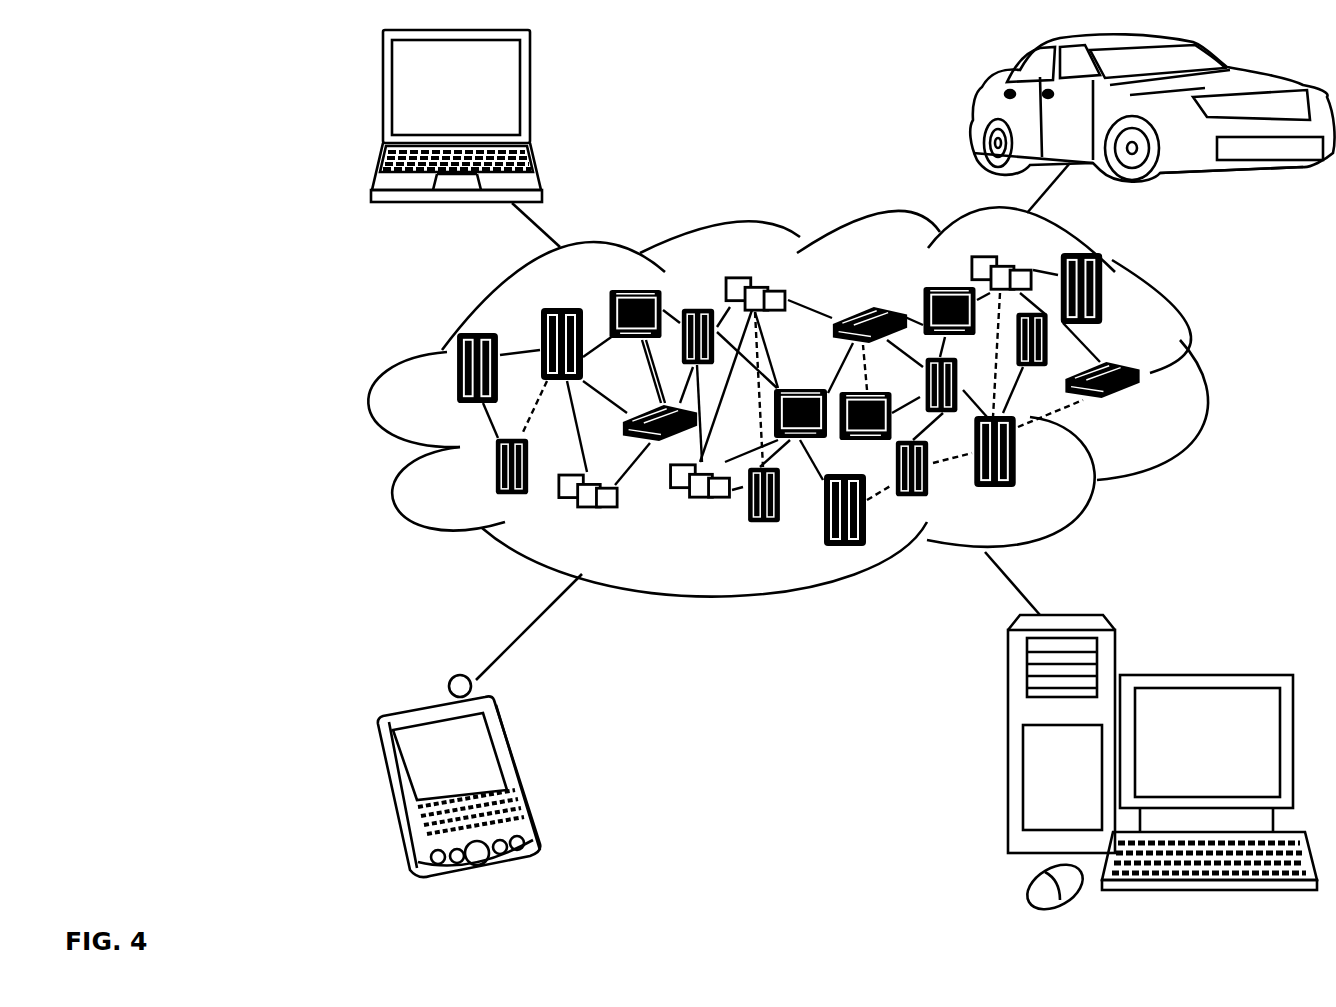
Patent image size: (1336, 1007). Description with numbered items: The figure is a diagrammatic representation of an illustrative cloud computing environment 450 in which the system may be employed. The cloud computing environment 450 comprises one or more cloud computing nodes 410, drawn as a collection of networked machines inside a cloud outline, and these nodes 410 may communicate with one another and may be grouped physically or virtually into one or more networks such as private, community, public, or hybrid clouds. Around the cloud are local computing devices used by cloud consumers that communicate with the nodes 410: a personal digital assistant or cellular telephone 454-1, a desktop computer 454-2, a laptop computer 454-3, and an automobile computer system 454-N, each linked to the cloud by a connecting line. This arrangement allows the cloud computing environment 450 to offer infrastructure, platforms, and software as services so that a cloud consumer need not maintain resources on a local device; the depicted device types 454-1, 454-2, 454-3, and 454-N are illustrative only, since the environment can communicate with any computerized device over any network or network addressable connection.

The cloud computing environment 450 is at (1207, 377).
The cloud computing nodes 410 is at (1150, 409).
The personal digital assistant or cellular telephone 454-1 is at (517, 772).
The desktop computer 454-2 is at (1220, 652).
The laptop computer 454-3 is at (530, 96).
The automobile computer system 454-N is at (978, 108).